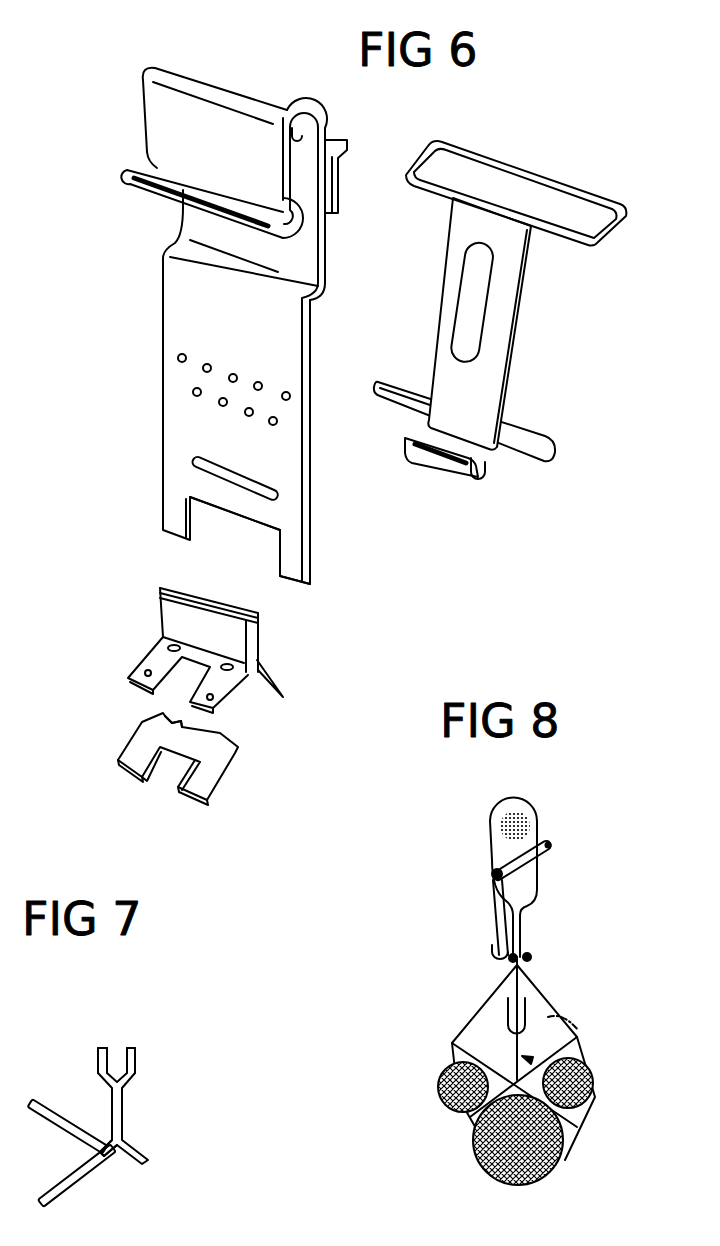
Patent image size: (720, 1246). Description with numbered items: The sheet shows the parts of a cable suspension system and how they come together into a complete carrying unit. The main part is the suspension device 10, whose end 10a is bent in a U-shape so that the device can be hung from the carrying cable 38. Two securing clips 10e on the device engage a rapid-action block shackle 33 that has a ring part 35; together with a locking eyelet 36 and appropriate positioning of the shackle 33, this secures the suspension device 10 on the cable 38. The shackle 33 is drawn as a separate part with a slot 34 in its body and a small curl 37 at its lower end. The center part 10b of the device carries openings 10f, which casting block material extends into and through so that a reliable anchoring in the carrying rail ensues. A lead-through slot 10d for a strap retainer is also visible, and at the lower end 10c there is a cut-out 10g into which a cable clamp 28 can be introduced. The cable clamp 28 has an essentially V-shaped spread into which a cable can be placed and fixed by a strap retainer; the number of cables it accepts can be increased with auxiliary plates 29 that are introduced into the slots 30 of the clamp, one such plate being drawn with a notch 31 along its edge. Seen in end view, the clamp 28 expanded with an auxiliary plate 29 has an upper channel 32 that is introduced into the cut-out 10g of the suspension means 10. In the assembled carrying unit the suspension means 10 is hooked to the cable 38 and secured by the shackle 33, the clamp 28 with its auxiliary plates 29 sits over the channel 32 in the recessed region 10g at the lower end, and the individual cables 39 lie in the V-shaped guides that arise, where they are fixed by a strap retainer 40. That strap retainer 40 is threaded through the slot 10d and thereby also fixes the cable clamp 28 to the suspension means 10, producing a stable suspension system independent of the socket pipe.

In FIG. 6, the suspension device 10 is at (250, 320).
In FIG. 8, the suspension device 10 is at (537, 860).
In FIG. 6, the end 10a is at (290, 108).
In FIG. 6, the center part 10b is at (285, 363).
In FIG. 6, the lower end 10c is at (293, 565).
In FIG. 6, the lead-through slot 10d is at (200, 470).
In FIG. 6, the securing clips 10e is at (347, 152).
In FIG. 6, the openings 10f is at (178, 357).
In FIG. 6, the cut-out 10g is at (252, 537).
In FIG. 6, the cable clamp 28 is at (213, 650).
In FIG. 7, the cable clamp 28 is at (154, 1105).
In FIG. 8, the cable clamp 28 is at (541, 1071).
In FIG. 6, the auxiliary plates 29 is at (192, 750).
In FIG. 7, the auxiliary plates 29 is at (55, 1092).
In FIG. 8, the auxiliary plates 29 is at (468, 1050).
In FIG. 6, the slots 30 is at (163, 637).
In FIG. 7, the slots 30 is at (103, 1160).
In FIG. 6, the notch in plate 31 is at (166, 712).
In FIG. 6, the upper channel 32 is at (248, 625).
In FIG. 7, the upper channel 32 is at (113, 1063).
In FIG. 8, the upper channel 32 is at (524, 1006).
In FIG. 6, the rapid-action block shackle 33 is at (523, 330).
In FIG. 8, the rapid-action block shackle 33 is at (526, 902).
In FIG. 6, the slot in spring plate 34 is at (492, 303).
In FIG. 6, the ring part 35 is at (623, 229).
In FIG. 6, the locking eyelet 36 is at (560, 453).
In FIG. 8, the locking eyelet 36 is at (530, 953).
In FIG. 6, the curl of spring plate 37 is at (487, 480).
In FIG. 8, the cable 38 is at (527, 800).
In FIG. 8, the individual cables 39 is at (562, 1163).
In FIG. 8, the strap retainer 40 is at (565, 1039).